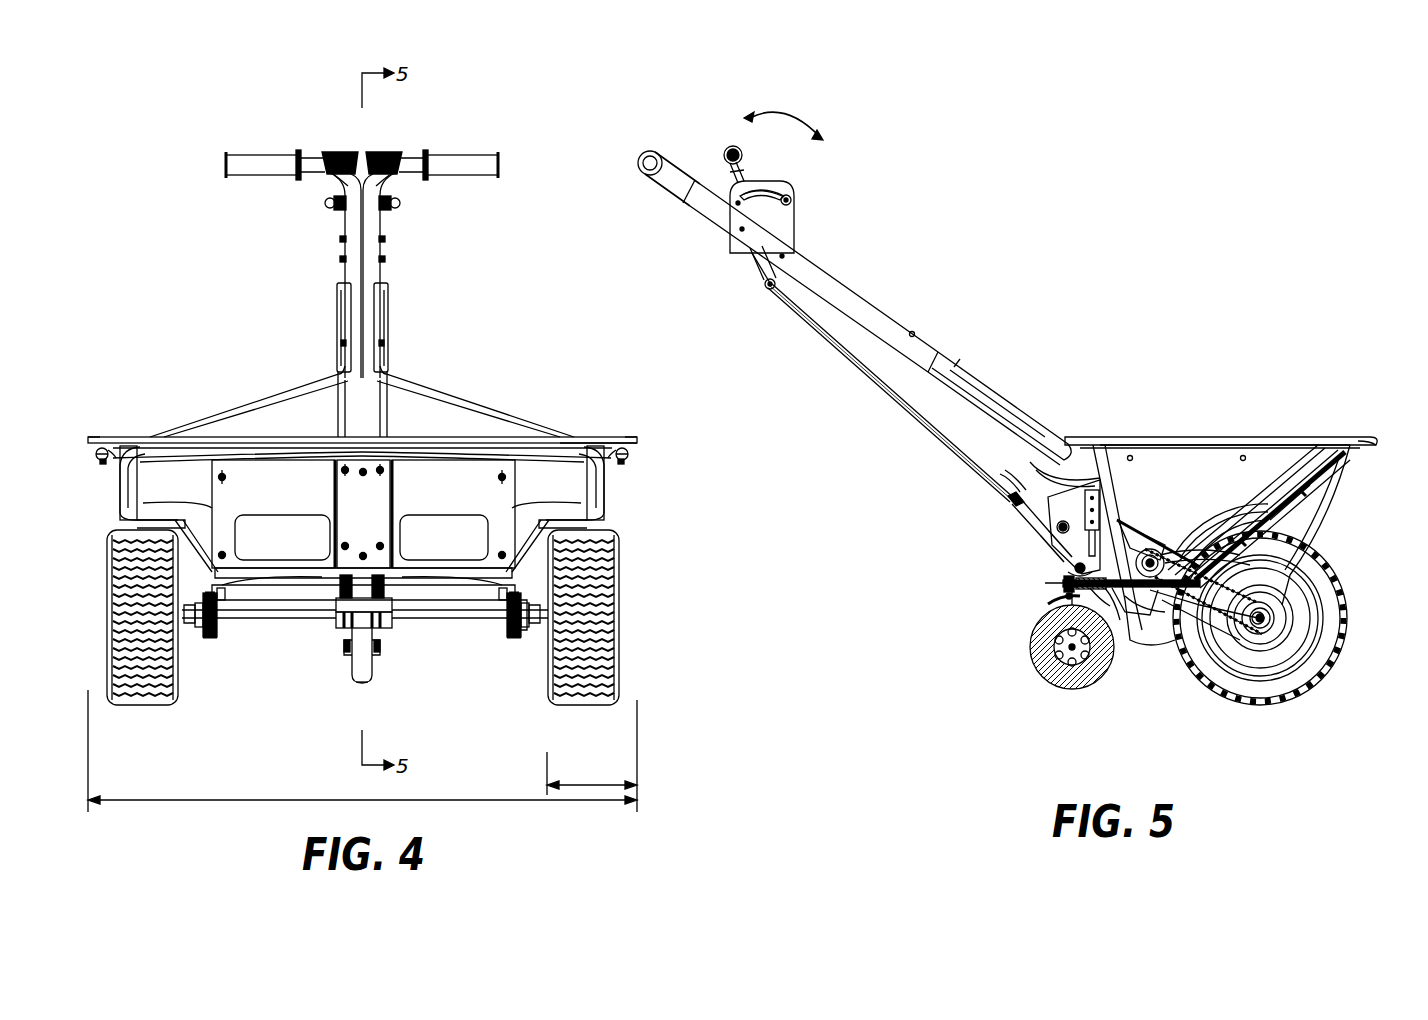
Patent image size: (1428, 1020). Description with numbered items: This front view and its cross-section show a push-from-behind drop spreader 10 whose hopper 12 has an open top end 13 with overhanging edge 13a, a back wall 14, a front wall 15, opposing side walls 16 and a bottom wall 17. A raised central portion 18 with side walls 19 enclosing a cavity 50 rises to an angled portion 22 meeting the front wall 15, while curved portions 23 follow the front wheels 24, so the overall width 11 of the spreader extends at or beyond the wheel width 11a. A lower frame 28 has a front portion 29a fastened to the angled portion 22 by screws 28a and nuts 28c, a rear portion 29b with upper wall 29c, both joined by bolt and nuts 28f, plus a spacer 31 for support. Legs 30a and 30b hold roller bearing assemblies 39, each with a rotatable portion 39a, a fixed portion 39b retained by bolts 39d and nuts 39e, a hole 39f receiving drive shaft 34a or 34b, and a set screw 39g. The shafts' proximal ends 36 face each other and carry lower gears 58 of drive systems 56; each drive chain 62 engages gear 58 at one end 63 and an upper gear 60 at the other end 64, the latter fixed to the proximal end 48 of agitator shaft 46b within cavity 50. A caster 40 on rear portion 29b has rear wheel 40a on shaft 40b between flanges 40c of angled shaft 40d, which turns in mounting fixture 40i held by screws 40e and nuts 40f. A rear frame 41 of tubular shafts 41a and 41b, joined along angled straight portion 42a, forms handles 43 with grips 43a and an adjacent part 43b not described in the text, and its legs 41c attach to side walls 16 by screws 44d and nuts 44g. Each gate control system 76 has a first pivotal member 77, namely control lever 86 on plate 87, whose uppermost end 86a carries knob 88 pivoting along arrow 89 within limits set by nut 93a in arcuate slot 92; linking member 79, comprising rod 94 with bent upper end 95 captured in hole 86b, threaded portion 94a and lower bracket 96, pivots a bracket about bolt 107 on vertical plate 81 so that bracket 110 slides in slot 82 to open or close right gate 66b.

In FIG. 4, the drop spreader 10 is at (121, 92).
In FIG. 4, the overall width dimension 11 is at (458, 800).
In FIG. 4, the wheel width 11a is at (580, 785).
In FIG. 4, the hopper 12 is at (496, 437).
In FIG. 5, the hopper 12 is at (1370, 428).
In FIG. 4, the open top end 13 is at (594, 437).
In FIG. 5, the open top end 13 is at (1300, 441).
In FIG. 4, the overhanging edge 13a is at (624, 437).
In FIG. 5, the overhanging edge 13a is at (1369, 436).
In FIG. 5, the back wall 14 is at (1040, 458).
In FIG. 4, the front wall 15 is at (132, 453).
In FIG. 5, the front wall 15 is at (1326, 460).
In FIG. 4, the side walls 16 is at (116, 491).
In FIG. 5, the side walls 16 is at (1202, 446).
In FIG. 5, the bottom wall 17 is at (1182, 560).
In FIG. 5, the raised central portion 18 is at (1170, 540).
In FIG. 5, the side walls of raised central portion 19 is at (1122, 521).
In FIG. 4, the angled portion 22 is at (552, 460).
In FIG. 5, the angled portion 22 is at (1276, 502).
In FIG. 4, the curved portions 23 is at (140, 520).
In FIG. 5, the curved portions 23 is at (1238, 516).
In FIG. 4, the wheels 24 is at (108, 604).
In FIG. 5, the wheels 24 is at (1345, 619).
In FIG. 4, the lower frame 28 is at (447, 461).
In FIG. 5, the lower frame 28 is at (1301, 501).
In FIG. 4, the screws 28a is at (222, 477).
In FIG. 4, the retaining nuts 28c is at (362, 461).
In FIG. 4, the bolt and nuts 28f is at (343, 473).
In FIG. 4, the front portion 29a is at (288, 461).
In FIG. 5, the front portion 29a is at (1318, 479).
In FIG. 4, the rear portion 29b is at (395, 560).
In FIG. 5, the rear portion 29b is at (1126, 596).
In FIG. 5, the upper wall 29c is at (1114, 598).
In FIG. 4, the left legs 30a is at (210, 506).
In FIG. 4, the right legs 30b is at (548, 498).
In FIG. 5, the right legs 30b is at (1295, 528).
In FIG. 4, the cross-member or spacer 31 is at (397, 623).
In FIG. 4, the left drive shaft 34a is at (295, 620).
In FIG. 4, the right drive shaft 34b is at (444, 620).
In FIG. 5, the right drive shaft 34b is at (1260, 646).
In FIG. 5, the proximal end 36 is at (1297, 599).
In FIG. 4, the roller bearing assembly 39 is at (204, 636).
In FIG. 4, the rotatable portion 39a is at (218, 618).
In FIG. 4, the fixed portion 39b is at (204, 637).
In FIG. 4, the bolts 39d is at (199, 639).
In FIG. 4, the nuts 39e is at (223, 595).
In FIG. 4, the hole 39f is at (214, 620).
In FIG. 4, the set screw 39g is at (521, 637).
In FIG. 4, the caster 40 is at (352, 679).
In FIG. 5, the caster 40 is at (1074, 682).
In FIG. 4, the caster wheel 40a is at (366, 681).
In FIG. 5, the caster wheel 40a is at (1030, 652).
In FIG. 4, the shaft 40b is at (376, 653).
In FIG. 4, the flanges 40c is at (354, 660).
In FIG. 5, the angled shaft 40d is at (1112, 599).
In FIG. 5, the screws 40e is at (1106, 578).
In FIG. 5, the retaining nuts 40f is at (1054, 598).
In FIG. 5, the mounting fixture 40i is at (1058, 587).
In FIG. 4, the rear frame 41 is at (346, 324).
In FIG. 4, the tubular shaft 41a is at (338, 309).
In FIG. 4, the tubular shaft 41b is at (392, 309).
In FIG. 5, the tubular shaft 41b is at (884, 306).
In FIG. 4, the legs 41c is at (96, 460).
In FIG. 4, the angled straight portion 42a is at (384, 324).
In FIG. 5, the angled straight portion 42a is at (832, 266).
In FIG. 4, the handles 43 is at (258, 175).
In FIG. 5, the handles 43 is at (647, 150).
In FIG. 4, the handle grips 43a is at (261, 152).
In FIG. 5, the handle grips 43a is at (643, 150).
In FIG. 4, the grip mount 43b is at (396, 172).
In FIG. 4, the screws 44d is at (102, 460).
In FIG. 4, the retaining nuts 44g is at (96, 453).
In FIG. 5, the right rotational shaft 46b is at (1172, 540).
In FIG. 5, the proximal end 48 is at (1116, 588).
In FIG. 5, the cavity 50 is at (1122, 543).
In FIG. 4, the drive systems 56 is at (320, 560).
In FIG. 5, the drive systems 56 is at (1222, 590).
In FIG. 5, the lower gear or sprocket 58 is at (1254, 644).
In FIG. 5, the upper gear or sprocket 60 is at (1150, 544).
In FIG. 4, the drive chain 62 is at (324, 593).
In FIG. 5, the drive chain 62 is at (1210, 676).
In FIG. 5, the chain end 63 is at (1264, 612).
In FIG. 5, the chain end 64 is at (1145, 556).
In FIG. 5, the right gate 66b is at (1130, 595).
In FIG. 4, the gate control system 76 is at (344, 150).
In FIG. 5, the gate control system 76 is at (748, 260).
In FIG. 4, the first pivotal member 77 is at (333, 210).
In FIG. 5, the first pivotal member 77 is at (747, 180).
In FIG. 4, the linking member 79 is at (338, 357).
In FIG. 5, the linking member 79 is at (1002, 484).
In FIG. 5, the vertical plate 81 is at (1086, 488).
In FIG. 5, the slot 82 is at (1072, 564).
In FIG. 5, the control lever 86 is at (728, 178).
In FIG. 5, the uppermost end 86a is at (732, 126).
In FIG. 5, the hole 86b is at (758, 284).
In FIG. 5, the plate 87 is at (796, 206).
In FIG. 5, the knob 88 is at (727, 143).
In FIG. 5, the arrow 89 is at (788, 118).
In FIG. 5, the arcuate slot 92 is at (780, 180).
In FIG. 5, the nut 93a is at (794, 190).
In FIG. 5, the rod 94 is at (964, 464).
In FIG. 5, the threaded portion 94a is at (992, 502).
In FIG. 5, the bent upper end 95 is at (765, 287).
In FIG. 5, the lower bracket 96 is at (1017, 530).
In FIG. 5, the bolt 107 is at (1040, 534).
In FIG. 5, the bracket 110 is at (1076, 486).